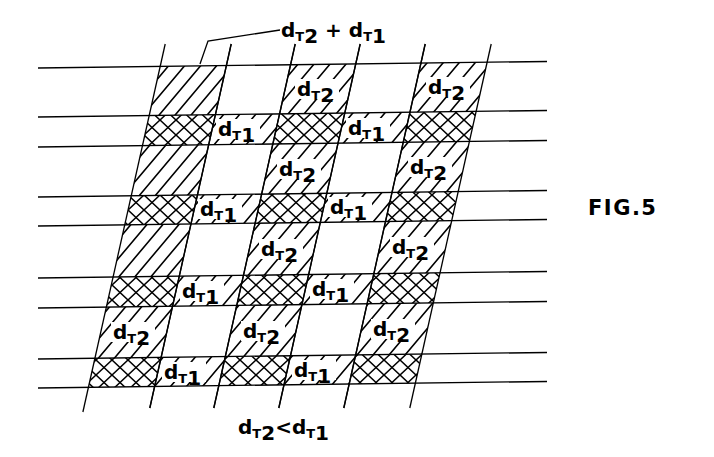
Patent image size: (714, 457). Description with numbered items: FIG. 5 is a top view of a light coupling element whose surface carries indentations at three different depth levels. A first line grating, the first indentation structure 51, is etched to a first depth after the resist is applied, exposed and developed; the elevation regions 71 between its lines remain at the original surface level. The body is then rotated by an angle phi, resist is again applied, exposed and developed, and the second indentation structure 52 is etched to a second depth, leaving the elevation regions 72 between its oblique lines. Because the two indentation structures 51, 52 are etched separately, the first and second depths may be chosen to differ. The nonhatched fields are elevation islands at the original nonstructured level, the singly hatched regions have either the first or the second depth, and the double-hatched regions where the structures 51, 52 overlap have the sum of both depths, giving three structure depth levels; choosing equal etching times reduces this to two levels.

The elevation islands 71 is at (292, 225).
The first indentation structure 51 is at (261, 250).
The second indentation structure 52 is at (287, 229).
The elevation islands 72 is at (287, 229).